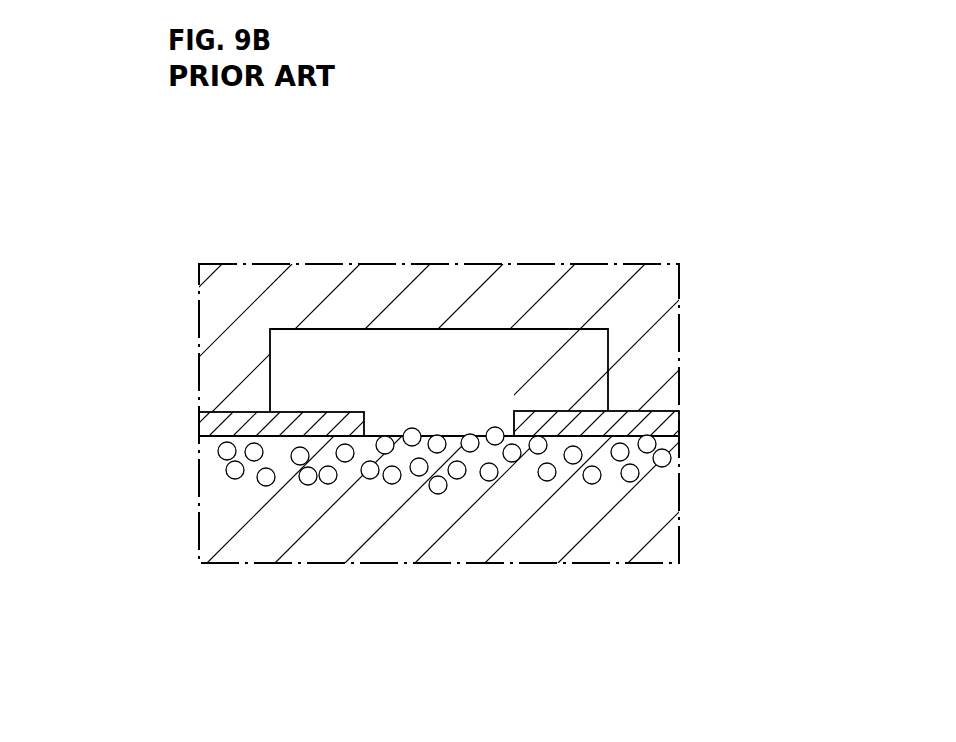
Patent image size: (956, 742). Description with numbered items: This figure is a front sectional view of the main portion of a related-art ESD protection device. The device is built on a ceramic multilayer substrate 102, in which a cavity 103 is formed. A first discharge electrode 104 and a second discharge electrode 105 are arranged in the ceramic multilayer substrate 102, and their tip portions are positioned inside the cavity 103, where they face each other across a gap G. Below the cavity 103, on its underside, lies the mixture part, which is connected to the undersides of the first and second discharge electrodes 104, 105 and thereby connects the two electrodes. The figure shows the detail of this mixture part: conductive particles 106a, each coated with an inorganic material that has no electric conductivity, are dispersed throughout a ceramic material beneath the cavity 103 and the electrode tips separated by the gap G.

The ceramic multilayer substrate 102 is at (198, 292).
The cavity 103 is at (487, 347).
The first discharge electrode 104 is at (308, 412).
The second discharge electrode 105 is at (577, 411).
The conductive particles 106a is at (489, 481).
The gap G is at (424, 413).